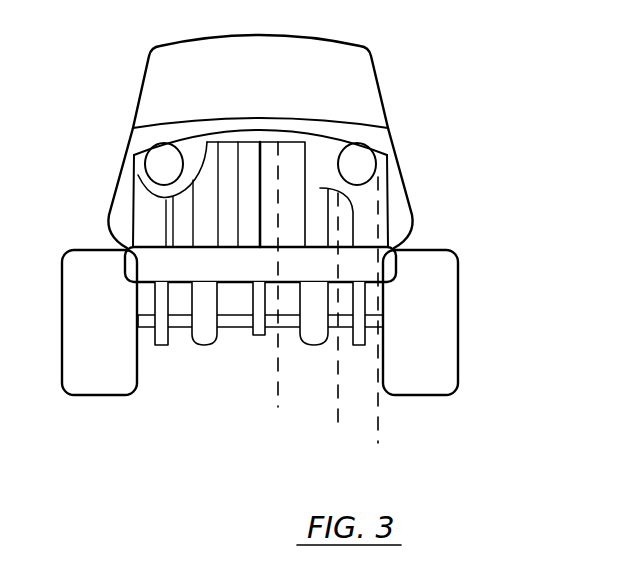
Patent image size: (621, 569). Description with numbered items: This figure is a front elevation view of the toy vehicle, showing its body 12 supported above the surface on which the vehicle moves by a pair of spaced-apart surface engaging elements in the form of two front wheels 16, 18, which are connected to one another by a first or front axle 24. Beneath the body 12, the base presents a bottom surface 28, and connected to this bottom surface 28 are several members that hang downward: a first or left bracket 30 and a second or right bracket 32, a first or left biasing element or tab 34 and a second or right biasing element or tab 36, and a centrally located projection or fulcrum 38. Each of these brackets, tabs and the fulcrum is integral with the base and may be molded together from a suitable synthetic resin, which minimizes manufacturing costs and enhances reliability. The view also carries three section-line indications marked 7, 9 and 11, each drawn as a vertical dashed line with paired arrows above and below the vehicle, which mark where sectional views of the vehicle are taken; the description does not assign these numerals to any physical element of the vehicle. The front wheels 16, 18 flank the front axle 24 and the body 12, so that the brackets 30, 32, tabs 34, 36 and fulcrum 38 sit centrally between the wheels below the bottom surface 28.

The body 12 is at (345, 63).
The front wheel 18 is at (88, 260).
The front wheel 16 is at (437, 260).
The bottom surface 28 is at (147, 286).
The front axle 24 is at (147, 325).
The right bracket 32 is at (160, 343).
The right biasing element 36 is at (203, 330).
The fulcrum 38 is at (262, 333).
The left biasing element 34 is at (318, 337).
The left bracket 30 is at (358, 340).
The section line 11- 11 is at (270, 217).
The section line 9- 9 is at (330, 198).
The section line 7- 7 is at (368, 178).